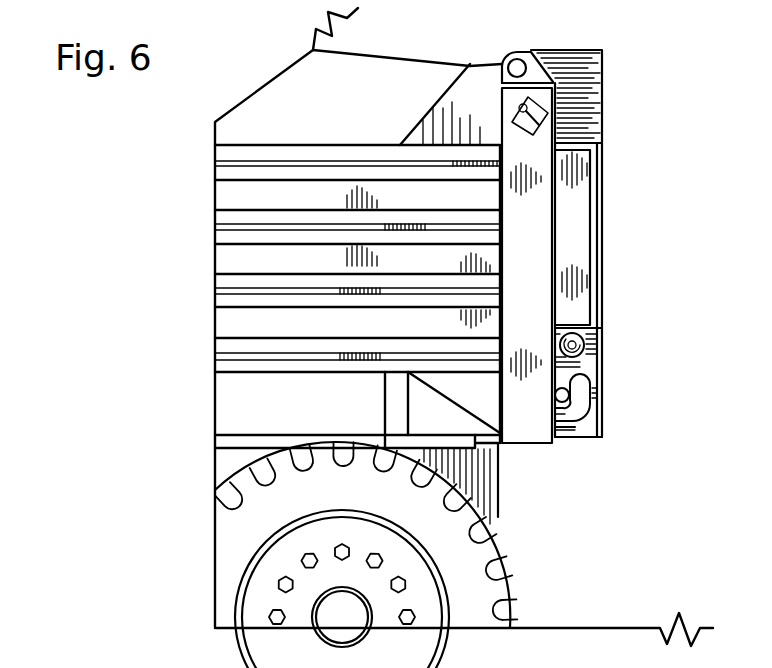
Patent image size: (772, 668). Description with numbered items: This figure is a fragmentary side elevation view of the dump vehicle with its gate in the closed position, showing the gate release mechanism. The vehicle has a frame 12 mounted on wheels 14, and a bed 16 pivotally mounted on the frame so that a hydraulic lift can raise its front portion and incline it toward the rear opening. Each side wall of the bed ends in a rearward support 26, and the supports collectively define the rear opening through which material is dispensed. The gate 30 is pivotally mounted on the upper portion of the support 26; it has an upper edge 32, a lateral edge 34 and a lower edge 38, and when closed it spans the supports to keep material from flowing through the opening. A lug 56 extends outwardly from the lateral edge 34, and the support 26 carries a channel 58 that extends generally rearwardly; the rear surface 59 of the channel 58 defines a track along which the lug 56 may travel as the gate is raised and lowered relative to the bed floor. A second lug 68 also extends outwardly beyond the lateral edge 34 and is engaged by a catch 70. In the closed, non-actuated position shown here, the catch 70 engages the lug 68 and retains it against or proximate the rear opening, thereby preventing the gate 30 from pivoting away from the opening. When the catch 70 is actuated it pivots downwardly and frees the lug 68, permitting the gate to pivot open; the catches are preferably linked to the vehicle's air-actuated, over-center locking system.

The frame 12 is at (499, 482).
The wheels 14 is at (512, 593).
The bed 16 is at (372, 48).
The support 26 is at (536, 284).
The gate 30 is at (543, 37).
The upper edge 32 is at (592, 50).
The lateral edge 34 is at (602, 100).
The lower edge 38 is at (568, 440).
The lug 56 is at (598, 343).
The channel 58 is at (584, 229).
The rear surface 59 is at (590, 203).
The lug 68 is at (553, 394).
The catch 70 is at (600, 393).